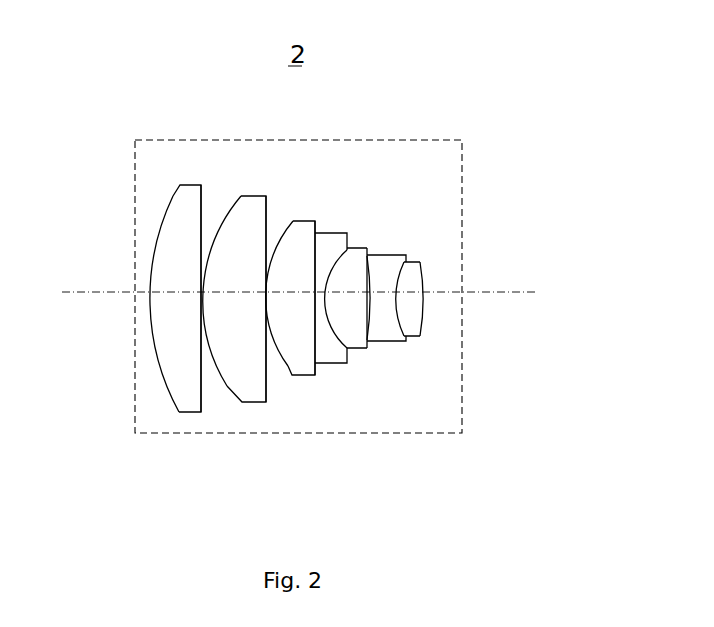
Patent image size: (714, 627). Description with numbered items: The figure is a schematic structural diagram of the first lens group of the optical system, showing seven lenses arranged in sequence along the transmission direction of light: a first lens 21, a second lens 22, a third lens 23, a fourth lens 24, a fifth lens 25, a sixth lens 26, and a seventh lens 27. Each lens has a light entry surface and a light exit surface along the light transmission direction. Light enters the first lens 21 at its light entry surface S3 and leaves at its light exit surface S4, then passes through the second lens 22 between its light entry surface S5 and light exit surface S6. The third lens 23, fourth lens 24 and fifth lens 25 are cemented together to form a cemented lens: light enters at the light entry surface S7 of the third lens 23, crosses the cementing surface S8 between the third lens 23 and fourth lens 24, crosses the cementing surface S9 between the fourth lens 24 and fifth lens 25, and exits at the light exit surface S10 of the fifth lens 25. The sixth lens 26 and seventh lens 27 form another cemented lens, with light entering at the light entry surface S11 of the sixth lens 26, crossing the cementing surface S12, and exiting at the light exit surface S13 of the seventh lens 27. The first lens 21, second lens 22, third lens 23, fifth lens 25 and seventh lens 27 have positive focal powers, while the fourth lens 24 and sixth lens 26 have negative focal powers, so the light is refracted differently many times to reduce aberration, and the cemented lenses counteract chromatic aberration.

The first lens 21 is at (146, 282).
The second lens 22 is at (238, 292).
The third lens 23 is at (306, 269).
The fourth lens 24 is at (343, 234).
The fifth lens 25 is at (369, 260).
The sixth lens 26 is at (404, 249).
The seventh lens 27 is at (452, 253).
The light entry surface of the first lens S3 is at (150, 323).
The light exit surface of the first lens S4 is at (200, 380).
The light entry surface of the second lens S5 is at (226, 388).
The light exit surface of the second lens S6 is at (265, 385).
The light entry surface of the third lens S7 is at (292, 378).
The cementing surface of the third lens and the fourth lens S8 is at (314, 254).
The cementing surface of the fourth lens and the fifth lens S9 is at (356, 248).
The light exit surface of the fifth lens S10 is at (365, 312).
The light entry surface of the sixth lens S11 is at (370, 315).
The cementing surface of the sixth lens and the seventh lens S12 is at (402, 320).
The light exit surface of the seventh lens S13 is at (423, 312).